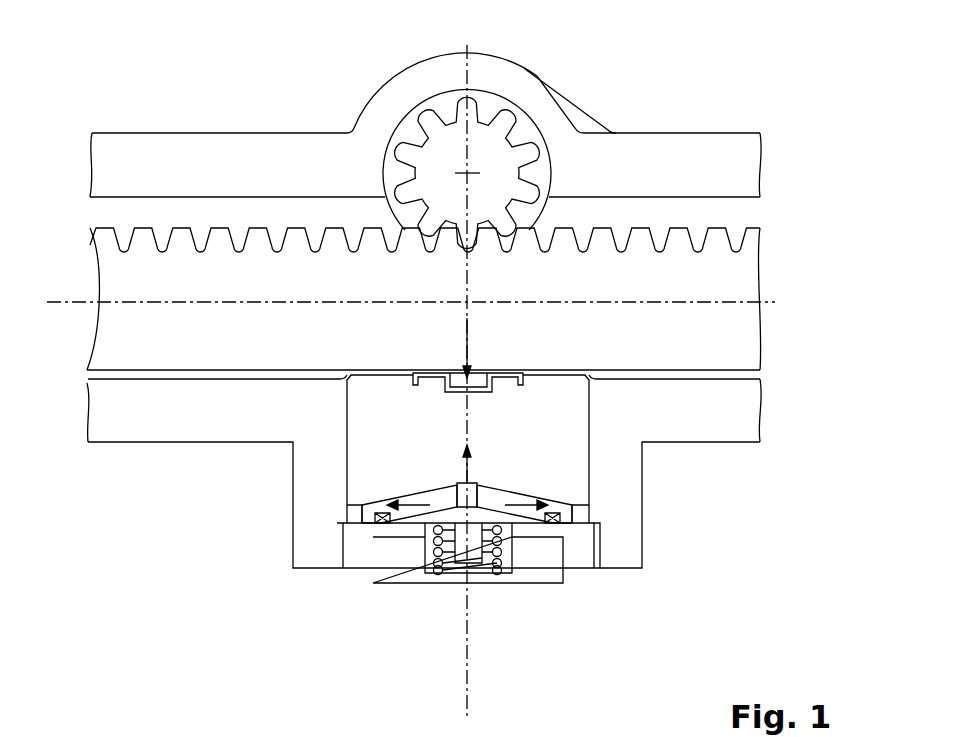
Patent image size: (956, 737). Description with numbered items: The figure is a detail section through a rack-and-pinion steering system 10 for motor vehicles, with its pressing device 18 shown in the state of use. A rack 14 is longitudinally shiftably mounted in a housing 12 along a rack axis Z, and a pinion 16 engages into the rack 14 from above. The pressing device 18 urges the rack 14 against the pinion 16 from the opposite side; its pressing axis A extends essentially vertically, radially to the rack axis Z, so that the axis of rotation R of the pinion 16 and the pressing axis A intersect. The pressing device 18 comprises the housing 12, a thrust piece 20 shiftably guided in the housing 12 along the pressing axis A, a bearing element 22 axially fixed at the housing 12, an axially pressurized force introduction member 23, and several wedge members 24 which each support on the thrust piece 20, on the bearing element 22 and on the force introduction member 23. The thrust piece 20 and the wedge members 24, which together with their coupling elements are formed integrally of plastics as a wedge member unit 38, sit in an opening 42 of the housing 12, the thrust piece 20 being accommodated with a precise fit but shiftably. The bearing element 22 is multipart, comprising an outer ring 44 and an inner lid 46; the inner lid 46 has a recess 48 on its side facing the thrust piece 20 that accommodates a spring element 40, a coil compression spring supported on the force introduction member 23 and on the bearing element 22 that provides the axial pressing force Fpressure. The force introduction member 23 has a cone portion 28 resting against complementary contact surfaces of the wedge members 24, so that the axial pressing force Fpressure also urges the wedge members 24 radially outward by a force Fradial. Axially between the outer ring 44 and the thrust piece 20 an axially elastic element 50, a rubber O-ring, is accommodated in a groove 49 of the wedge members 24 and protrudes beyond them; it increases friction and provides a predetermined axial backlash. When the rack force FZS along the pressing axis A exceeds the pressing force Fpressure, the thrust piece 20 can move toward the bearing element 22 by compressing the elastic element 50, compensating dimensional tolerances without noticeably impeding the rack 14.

The rack-and-pinion steering system 10 is at (645, 95).
The housing 12 is at (300, 532).
The rack 14 is at (742, 290).
The pinion 16 is at (483, 125).
The pressing device 18 is at (620, 583).
The thrust piece 20 is at (565, 432).
The bearing element 22 is at (340, 584).
The force introduction member 23 is at (455, 548).
The wedge members 24 is at (573, 484).
The cone portion 28 is at (515, 545).
The wedge member unit 38 is at (524, 504).
The spring element 40 is at (482, 555).
The opening 42 is at (468, 545).
The outer ring 44 is at (583, 548).
The inner lid 46 is at (545, 555).
The recess 48 is at (497, 565).
The groove 49 is at (570, 513).
The elastic element 50 is at (552, 518).
The pressing axis A is at (467, 703).
The rack axis Z is at (62, 302).
The axis of rotation R is at (457, 173).
The rack force FZS is at (475, 322).
The axial pressing force Fpressure is at (457, 465).
The radial force Fradial is at (422, 558).